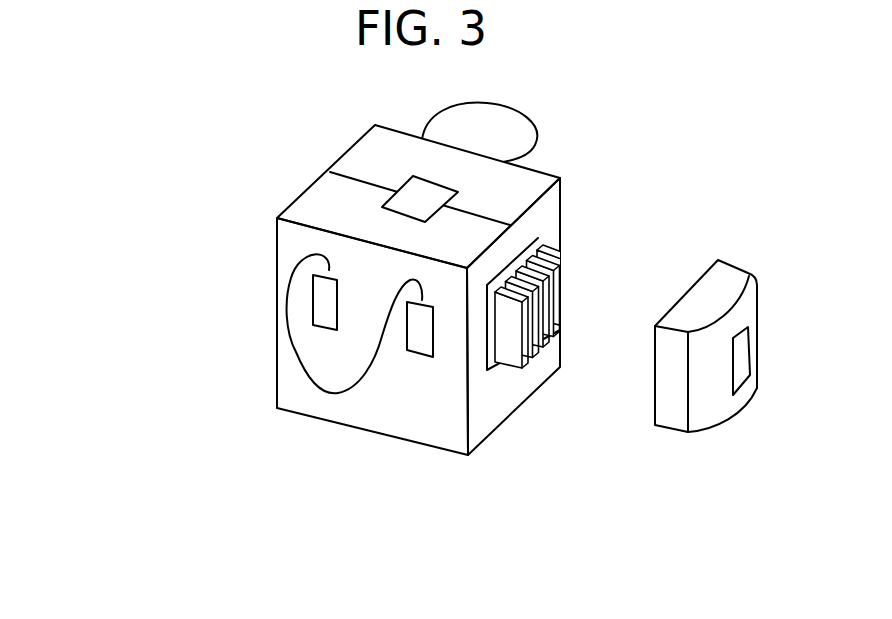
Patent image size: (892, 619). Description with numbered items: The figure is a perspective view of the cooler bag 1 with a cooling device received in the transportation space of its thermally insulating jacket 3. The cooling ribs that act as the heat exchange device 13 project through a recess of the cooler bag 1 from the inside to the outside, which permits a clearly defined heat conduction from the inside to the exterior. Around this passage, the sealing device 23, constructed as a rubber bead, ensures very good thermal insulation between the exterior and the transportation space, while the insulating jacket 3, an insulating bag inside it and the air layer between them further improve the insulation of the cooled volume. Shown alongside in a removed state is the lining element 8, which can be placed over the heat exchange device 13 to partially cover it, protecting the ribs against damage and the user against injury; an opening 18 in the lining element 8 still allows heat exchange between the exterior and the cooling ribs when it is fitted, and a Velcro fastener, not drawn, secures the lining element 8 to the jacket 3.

The cooler bag 1 is at (245, 143).
The jacket 3 is at (538, 170).
The sealing device 23 is at (542, 239).
The heat exchange device 13 is at (562, 258).
The lining element 8 is at (665, 398).
The opening 18 is at (740, 365).